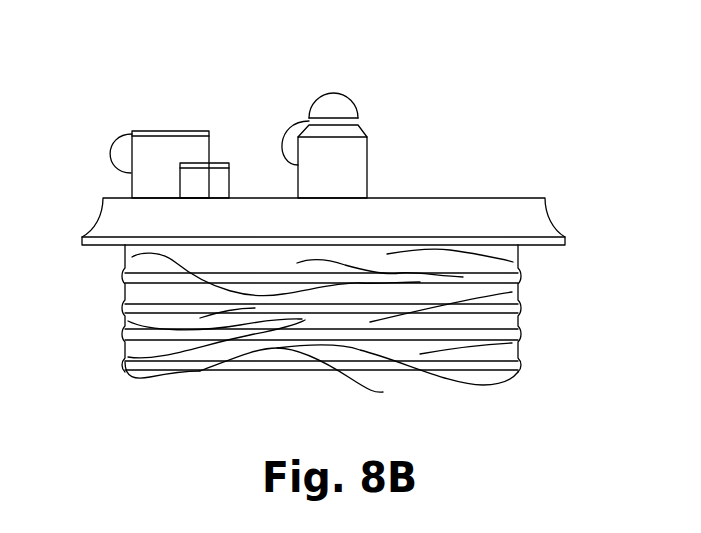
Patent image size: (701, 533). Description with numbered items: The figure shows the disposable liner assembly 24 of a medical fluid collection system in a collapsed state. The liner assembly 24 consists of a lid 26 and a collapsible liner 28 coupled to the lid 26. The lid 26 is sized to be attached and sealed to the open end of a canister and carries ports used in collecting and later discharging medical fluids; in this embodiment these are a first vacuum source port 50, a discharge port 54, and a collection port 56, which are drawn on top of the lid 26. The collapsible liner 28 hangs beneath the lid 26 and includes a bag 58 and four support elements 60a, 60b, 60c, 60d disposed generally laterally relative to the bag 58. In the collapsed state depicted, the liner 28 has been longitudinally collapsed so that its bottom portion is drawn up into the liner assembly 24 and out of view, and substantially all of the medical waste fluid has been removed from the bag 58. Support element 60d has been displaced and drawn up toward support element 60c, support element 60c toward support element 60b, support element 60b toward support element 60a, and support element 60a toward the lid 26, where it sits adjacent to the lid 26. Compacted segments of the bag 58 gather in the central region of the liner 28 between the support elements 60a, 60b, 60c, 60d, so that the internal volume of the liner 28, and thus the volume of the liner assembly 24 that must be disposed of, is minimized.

The liner assembly 24 is at (513, 82).
The lid 26 is at (413, 188).
The collapsible liner 28 is at (112, 329).
The first vacuum source port 50 is at (208, 183).
The discharge port 54 is at (183, 150).
The collection port 56 is at (336, 157).
The bag 58 is at (157, 295).
The support element 60a is at (517, 277).
The support element 60b is at (503, 311).
The support element 60c is at (497, 335).
The support element 60d is at (503, 367).